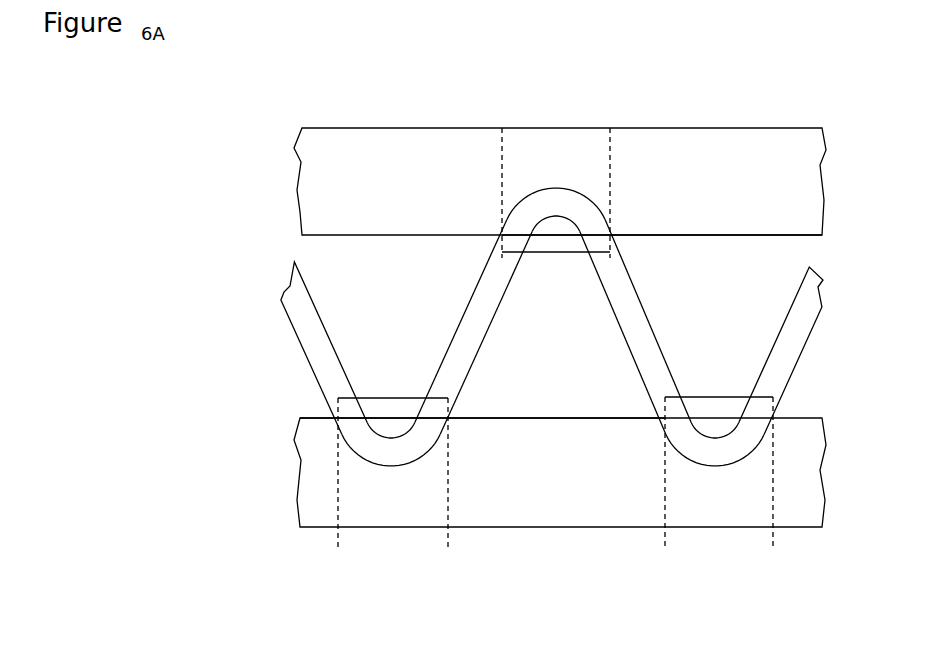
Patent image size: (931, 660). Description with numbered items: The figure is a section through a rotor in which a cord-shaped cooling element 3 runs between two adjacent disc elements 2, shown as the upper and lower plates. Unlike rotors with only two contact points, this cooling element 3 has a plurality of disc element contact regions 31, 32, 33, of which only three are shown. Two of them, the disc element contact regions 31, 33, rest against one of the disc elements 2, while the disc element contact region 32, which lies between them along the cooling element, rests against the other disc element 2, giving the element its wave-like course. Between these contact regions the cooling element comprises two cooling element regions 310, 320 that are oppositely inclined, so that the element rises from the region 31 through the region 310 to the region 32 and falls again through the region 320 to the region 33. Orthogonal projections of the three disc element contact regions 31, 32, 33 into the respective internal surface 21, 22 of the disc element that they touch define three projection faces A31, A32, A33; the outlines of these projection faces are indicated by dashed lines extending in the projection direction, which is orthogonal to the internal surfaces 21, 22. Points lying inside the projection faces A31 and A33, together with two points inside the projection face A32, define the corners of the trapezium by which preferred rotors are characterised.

The disc element 2 is at (700, 157).
The internal surface 21 is at (503, 413).
The internal surface 22 is at (739, 244).
The cooling element 3 is at (543, 331).
The disc element contact region 31 is at (395, 455).
The disc element contact region 32 is at (551, 204).
The disc element contact region 33 is at (720, 457).
The cooling element region 310 is at (470, 328).
The cooling element region 320 is at (641, 326).
The projection face A31 is at (390, 397).
The projection face A32 is at (553, 252).
The projection face A33 is at (721, 397).